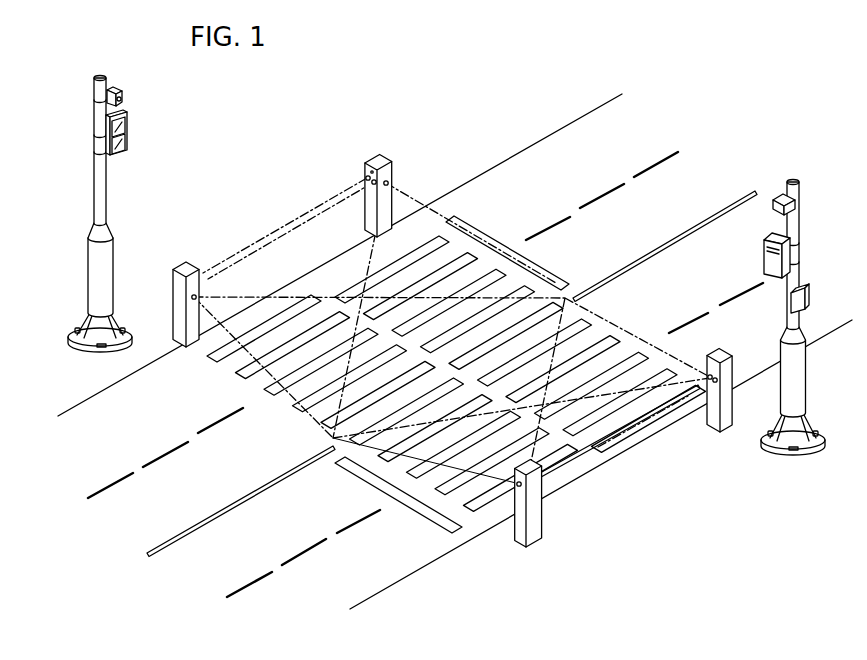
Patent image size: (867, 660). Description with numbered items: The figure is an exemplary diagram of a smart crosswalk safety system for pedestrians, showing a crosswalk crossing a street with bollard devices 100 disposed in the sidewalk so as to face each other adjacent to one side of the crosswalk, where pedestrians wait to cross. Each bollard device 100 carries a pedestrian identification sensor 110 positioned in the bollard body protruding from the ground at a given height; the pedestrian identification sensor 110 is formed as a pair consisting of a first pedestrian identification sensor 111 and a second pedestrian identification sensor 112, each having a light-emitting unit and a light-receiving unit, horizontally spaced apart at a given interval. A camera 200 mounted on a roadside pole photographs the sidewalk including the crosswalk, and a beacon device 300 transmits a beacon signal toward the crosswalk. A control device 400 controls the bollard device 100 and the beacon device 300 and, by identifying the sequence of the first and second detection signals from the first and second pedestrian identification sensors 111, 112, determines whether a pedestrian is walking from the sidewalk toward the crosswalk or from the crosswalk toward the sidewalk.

The bollard device 100 is at (382, 134).
The pedestrian identification sensor 110 is at (304, 161).
The first pedestrian identification sensor 111 is at (367, 178).
The second pedestrian identification sensor 112 is at (372, 171).
The camera 200 is at (120, 100).
The beacon device 300 is at (388, 183).
The control device 400 is at (787, 302).